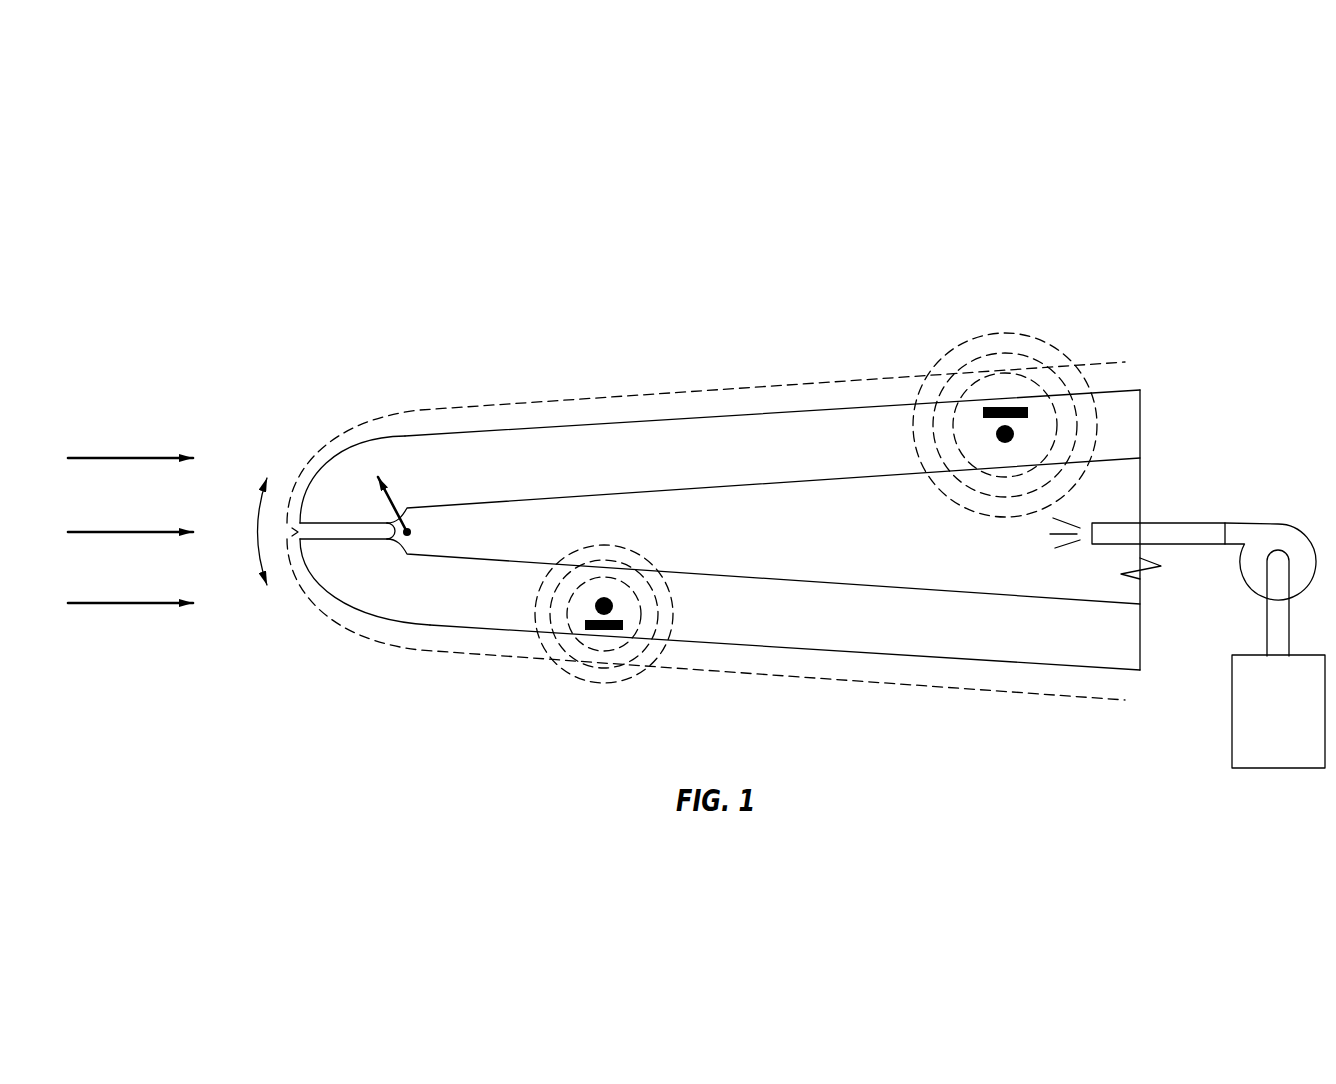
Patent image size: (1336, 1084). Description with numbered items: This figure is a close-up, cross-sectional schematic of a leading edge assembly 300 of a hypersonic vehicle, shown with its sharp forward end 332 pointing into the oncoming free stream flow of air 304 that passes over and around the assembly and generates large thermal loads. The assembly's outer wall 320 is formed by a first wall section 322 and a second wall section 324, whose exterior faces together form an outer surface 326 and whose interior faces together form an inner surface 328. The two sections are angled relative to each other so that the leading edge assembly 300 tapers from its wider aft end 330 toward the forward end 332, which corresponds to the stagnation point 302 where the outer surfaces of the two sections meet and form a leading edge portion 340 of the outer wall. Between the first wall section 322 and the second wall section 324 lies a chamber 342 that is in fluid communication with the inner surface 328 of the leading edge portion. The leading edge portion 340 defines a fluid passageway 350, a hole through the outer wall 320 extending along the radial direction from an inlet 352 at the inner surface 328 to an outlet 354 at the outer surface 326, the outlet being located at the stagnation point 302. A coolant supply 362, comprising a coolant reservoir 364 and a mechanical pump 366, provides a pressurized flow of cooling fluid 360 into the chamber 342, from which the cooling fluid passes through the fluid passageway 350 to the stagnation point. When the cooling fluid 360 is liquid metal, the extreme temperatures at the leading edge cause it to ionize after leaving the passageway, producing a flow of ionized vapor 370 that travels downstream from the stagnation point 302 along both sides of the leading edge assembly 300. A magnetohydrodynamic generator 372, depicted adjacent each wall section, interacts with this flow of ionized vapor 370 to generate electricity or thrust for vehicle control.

The leading edge assembly 300 is at (523, 220).
The stagnation point 302 is at (298, 541).
The free stream flow of air 304 is at (118, 604).
The outer wall 320 is at (795, 448).
The first wall section 322 is at (708, 447).
The second wall section 324 is at (817, 622).
The outer surface 326 is at (573, 427).
The inner surface 328 is at (763, 573).
The aft end 330 is at (1145, 320).
The forward end 332 is at (307, 412).
The leading edge portion 340 is at (365, 565).
The chamber 342 is at (991, 561).
The fluid passageway 350 is at (353, 522).
The inlet 352 is at (398, 541).
The outlet 354 is at (313, 522).
The cooling fluid 360 is at (1065, 547).
The coolant supply 362 is at (1248, 785).
The coolant reservoir 364 is at (1297, 727).
The mechanical pump 366 is at (1277, 523).
The flow of ionized vapor 370 is at (487, 407).
The magnetohydrodynamic generator 372 is at (980, 422).